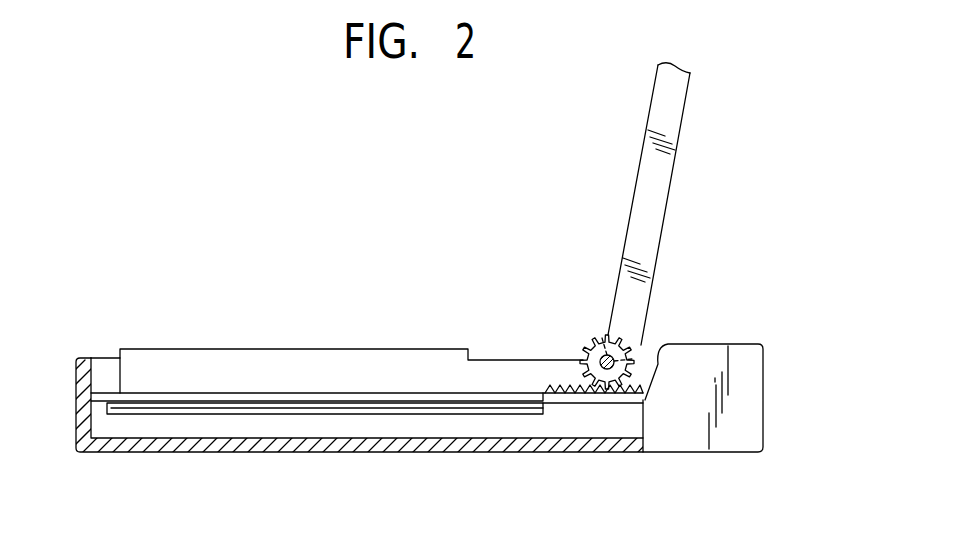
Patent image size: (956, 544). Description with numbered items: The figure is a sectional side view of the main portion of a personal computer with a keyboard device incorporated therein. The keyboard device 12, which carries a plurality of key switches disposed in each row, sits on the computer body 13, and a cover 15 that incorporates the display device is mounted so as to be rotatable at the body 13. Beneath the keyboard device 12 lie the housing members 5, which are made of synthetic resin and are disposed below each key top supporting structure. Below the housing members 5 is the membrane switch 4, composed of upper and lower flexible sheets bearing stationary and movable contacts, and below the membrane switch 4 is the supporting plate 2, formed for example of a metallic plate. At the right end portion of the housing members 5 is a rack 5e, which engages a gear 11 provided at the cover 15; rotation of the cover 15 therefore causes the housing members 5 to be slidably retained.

The supporting plate 2 is at (434, 414).
The membrane switch 4 is at (375, 403).
The housing member 5 is at (100, 392).
The rack 5e is at (566, 384).
The gear 11 is at (630, 345).
The keyboard device 12 is at (322, 341).
The body 13 is at (771, 417).
The cover 15 is at (675, 193).